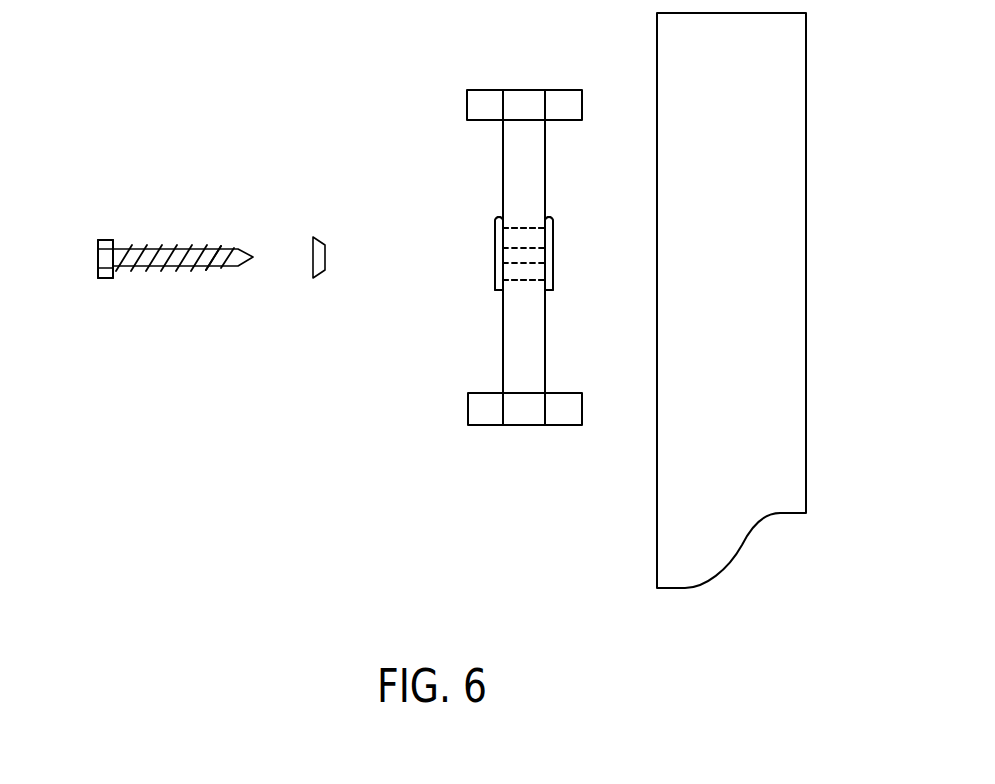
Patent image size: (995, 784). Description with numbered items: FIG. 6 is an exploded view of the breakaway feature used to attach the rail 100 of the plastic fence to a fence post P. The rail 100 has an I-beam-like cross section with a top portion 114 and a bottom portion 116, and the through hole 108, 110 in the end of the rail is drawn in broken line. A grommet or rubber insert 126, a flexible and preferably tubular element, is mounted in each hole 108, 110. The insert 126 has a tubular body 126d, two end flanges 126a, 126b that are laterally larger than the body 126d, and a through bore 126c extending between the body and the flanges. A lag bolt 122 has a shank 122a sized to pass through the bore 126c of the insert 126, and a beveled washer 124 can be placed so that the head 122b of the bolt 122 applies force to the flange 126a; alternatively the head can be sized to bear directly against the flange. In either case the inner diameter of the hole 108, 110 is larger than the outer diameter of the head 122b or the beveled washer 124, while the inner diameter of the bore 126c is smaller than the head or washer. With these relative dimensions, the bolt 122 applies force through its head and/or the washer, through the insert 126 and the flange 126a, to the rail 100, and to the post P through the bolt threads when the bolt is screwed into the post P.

The rail 100 is at (511, 302).
The through hole 108 is at (533, 217).
The through hole 110 is at (557, 220).
The top portion 114 is at (490, 105).
The bottom portion 116 is at (557, 413).
The bolt 122 is at (154, 286).
The shank 122a is at (218, 247).
The head 122b is at (104, 238).
The beveled washer 124 is at (305, 286).
The rubber insert 126 is at (483, 235).
The end flange 126a is at (496, 289).
The end flange 126b is at (552, 289).
The bore 126c is at (517, 253).
The tubular body 126d is at (515, 227).
The post P is at (790, 197).